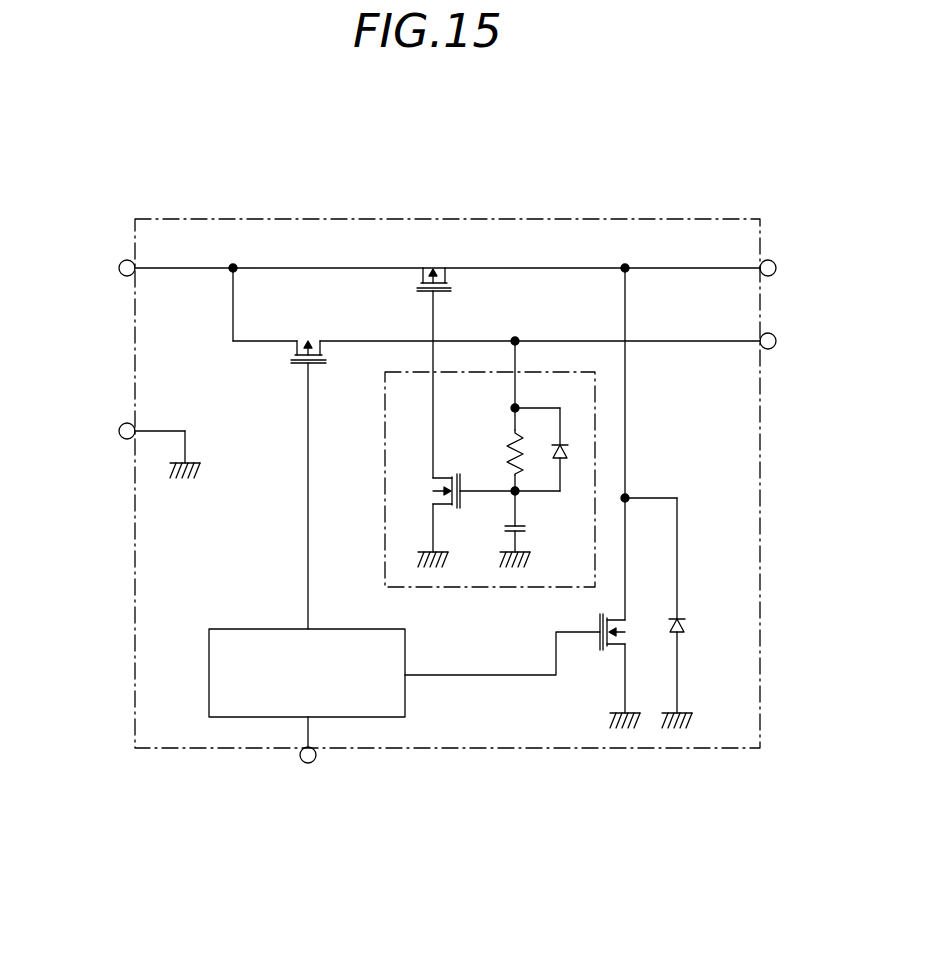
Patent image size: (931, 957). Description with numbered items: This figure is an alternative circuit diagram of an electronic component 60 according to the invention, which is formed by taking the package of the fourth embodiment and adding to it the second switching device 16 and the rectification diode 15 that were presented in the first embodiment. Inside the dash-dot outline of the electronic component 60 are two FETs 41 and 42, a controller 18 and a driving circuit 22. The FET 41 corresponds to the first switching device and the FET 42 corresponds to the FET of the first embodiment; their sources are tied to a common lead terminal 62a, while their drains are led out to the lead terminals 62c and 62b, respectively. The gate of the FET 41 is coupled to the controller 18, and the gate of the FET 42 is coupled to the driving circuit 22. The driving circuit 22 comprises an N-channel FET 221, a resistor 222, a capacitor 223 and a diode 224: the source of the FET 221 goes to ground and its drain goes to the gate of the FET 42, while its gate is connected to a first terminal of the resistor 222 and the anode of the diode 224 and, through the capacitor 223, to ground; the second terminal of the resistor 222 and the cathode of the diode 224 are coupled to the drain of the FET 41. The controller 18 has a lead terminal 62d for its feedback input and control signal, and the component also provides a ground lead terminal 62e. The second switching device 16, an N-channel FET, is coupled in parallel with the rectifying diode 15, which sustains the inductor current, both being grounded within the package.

The electronic component 60 is at (556, 129).
The lead terminal 62a is at (122, 262).
The lead terminal 62b is at (773, 262).
The lead terminal 62c is at (773, 335).
The lead terminal 62d is at (310, 763).
The lead terminal 62e is at (121, 425).
The FET 41 is at (296, 353).
The FET 42 is at (447, 276).
The driving circuit 22 is at (385, 447).
The N-channel FET 221 is at (443, 504).
The resistor 222 is at (512, 441).
The capacitor 223 is at (505, 528).
The diode 224 is at (562, 460).
The controller 18 is at (254, 628).
The second switching device 16 is at (617, 644).
The rectifying diode 15 is at (684, 625).